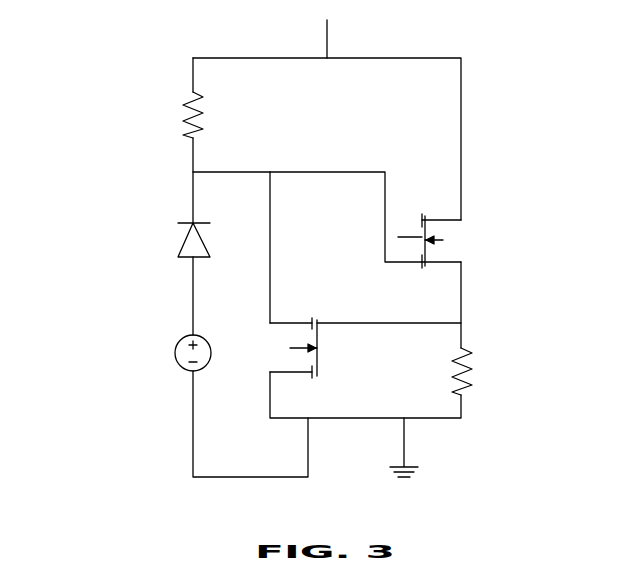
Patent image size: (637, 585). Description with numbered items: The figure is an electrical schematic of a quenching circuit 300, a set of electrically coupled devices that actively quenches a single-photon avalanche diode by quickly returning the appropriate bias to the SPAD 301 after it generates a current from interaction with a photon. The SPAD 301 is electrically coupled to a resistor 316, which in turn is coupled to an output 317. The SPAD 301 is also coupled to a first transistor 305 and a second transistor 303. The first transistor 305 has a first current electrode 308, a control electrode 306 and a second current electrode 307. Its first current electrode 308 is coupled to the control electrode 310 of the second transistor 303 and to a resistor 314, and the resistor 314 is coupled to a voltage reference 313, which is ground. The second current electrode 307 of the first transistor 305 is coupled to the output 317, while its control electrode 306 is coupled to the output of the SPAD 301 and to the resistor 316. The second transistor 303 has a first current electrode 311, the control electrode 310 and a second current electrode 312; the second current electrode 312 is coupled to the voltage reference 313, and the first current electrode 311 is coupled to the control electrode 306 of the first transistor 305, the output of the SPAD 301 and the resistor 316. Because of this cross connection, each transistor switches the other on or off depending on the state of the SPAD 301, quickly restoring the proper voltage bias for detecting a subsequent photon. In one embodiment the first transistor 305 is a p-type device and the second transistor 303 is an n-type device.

The quenching circuit 300 is at (564, 51).
The SPAD 301 is at (187, 242).
The second transistor 303 is at (268, 341).
The first transistor 305 is at (460, 240).
The control electrode 306 is at (399, 237).
The second current electrode 307 is at (447, 218).
The first current electrode 308 is at (448, 262).
The control electrode 310 is at (318, 348).
The first current electrode 311 is at (288, 323).
The second current electrode 312 is at (288, 374).
The voltage reference 313 is at (404, 465).
The resistor 314 is at (470, 367).
The resistor 316 is at (185, 120).
The output 317 is at (327, 44).